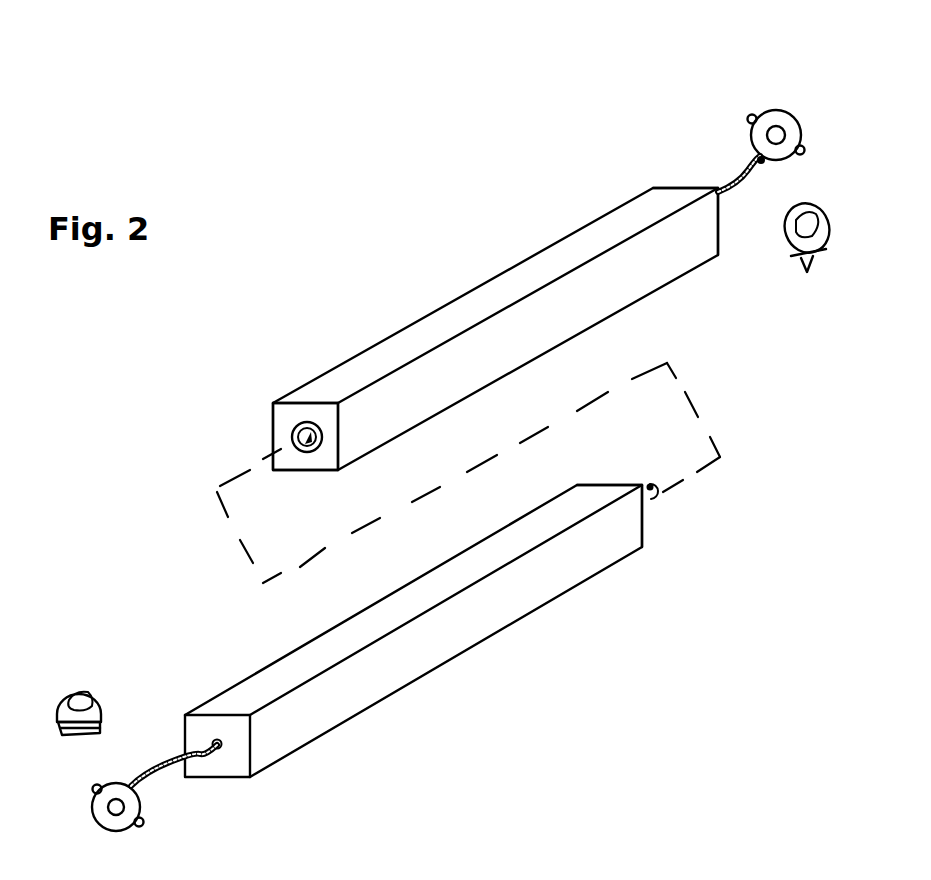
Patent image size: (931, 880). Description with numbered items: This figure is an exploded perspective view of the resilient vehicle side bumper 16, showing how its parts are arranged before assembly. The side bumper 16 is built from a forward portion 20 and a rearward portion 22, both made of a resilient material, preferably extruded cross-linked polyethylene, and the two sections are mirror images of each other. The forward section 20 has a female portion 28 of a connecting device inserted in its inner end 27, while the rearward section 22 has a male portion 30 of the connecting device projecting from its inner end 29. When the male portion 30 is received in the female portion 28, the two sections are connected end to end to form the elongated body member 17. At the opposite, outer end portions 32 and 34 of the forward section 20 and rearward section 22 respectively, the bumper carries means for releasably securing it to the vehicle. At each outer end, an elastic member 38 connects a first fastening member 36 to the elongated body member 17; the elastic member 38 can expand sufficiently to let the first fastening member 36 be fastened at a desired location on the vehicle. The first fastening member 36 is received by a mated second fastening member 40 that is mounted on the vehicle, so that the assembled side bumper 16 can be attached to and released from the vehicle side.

The vehicle side bumper 16 is at (684, 358).
The elongated body member 17 is at (428, 454).
The forward portion 20 is at (512, 288).
The rearward portion 22 is at (422, 597).
The inner end 27 is at (281, 433).
The female portion 28 is at (297, 428).
The inner end 29 is at (645, 531).
The male portion 30 is at (653, 496).
The outer end portion 32 is at (676, 186).
The outer end portion 34 is at (231, 765).
The first fastening member 36 is at (771, 110).
The elastic member 38 is at (735, 178).
The second fastening member 40 is at (798, 250).